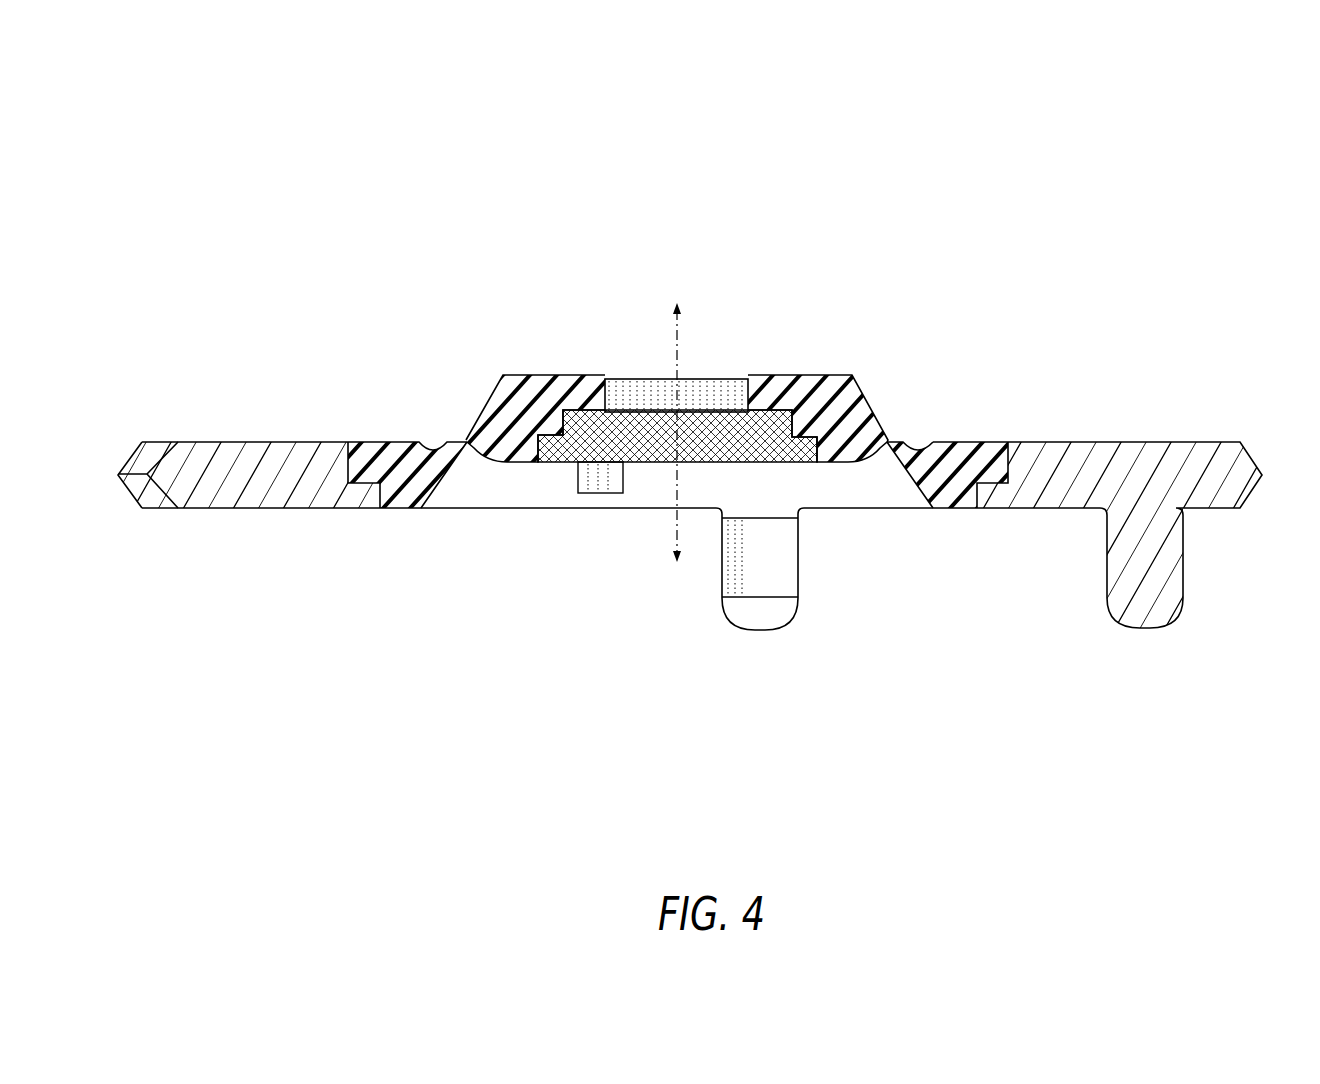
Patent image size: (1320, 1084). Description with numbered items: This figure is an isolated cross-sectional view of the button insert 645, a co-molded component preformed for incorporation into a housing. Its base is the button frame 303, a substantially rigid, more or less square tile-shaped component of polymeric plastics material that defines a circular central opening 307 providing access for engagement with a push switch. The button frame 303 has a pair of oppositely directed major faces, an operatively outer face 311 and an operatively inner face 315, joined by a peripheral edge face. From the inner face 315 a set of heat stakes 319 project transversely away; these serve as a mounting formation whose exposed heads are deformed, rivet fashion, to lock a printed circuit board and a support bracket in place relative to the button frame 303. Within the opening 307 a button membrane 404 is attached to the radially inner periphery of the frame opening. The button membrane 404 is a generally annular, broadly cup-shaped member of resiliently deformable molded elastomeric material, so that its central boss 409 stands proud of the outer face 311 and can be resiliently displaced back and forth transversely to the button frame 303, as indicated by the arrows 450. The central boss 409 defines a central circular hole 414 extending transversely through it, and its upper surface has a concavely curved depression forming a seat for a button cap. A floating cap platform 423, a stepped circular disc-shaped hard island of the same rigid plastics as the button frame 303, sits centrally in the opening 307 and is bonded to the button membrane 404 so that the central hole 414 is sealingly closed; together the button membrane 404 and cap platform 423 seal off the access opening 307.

The button frame 303 is at (287, 457).
The central opening 307 is at (1034, 467).
The outer face 311 is at (208, 424).
The inner face 315 is at (208, 530).
The heat stakes 319 is at (743, 607).
The button membrane 404 is at (902, 435).
The central boss 409 is at (531, 378).
The central circular hole 414 is at (782, 368).
The floating cap platform 423 is at (603, 457).
The arrows 450 is at (678, 350).
The button insert 645 is at (1142, 135).